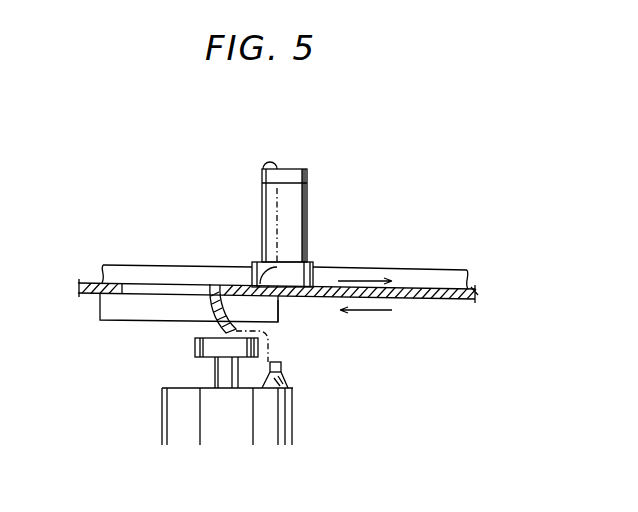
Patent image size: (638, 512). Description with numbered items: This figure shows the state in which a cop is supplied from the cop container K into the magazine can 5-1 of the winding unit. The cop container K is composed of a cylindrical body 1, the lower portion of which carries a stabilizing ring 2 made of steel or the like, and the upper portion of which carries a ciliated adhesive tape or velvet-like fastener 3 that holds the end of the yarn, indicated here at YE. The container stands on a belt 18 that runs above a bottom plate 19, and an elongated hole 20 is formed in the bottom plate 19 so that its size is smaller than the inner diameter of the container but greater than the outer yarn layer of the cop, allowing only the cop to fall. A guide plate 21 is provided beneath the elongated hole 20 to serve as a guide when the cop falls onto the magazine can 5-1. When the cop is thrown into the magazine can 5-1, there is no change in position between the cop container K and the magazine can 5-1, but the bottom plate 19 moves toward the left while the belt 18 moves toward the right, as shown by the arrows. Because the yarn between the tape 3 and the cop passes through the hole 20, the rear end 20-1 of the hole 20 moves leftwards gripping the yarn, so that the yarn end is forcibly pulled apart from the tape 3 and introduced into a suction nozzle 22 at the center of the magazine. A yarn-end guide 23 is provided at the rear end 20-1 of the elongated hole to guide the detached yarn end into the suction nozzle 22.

The cop container K is at (306, 158).
The cylindrical body 1 is at (308, 214).
The velvet-like fastener 3 is at (308, 178).
The pillar top reference YE is at (262, 193).
The stabilizing ring 2 is at (315, 265).
The hole 20 is at (132, 286).
The rear end of the hole 20-1 is at (209, 290).
The belt 18 is at (445, 277).
The bottom plate 19 is at (445, 301).
The yarn-end guide 23 is at (210, 307).
The guide plate 21 is at (278, 313).
The suction nozzle 22 is at (194, 349).
The magazine can 5-1 is at (288, 423).